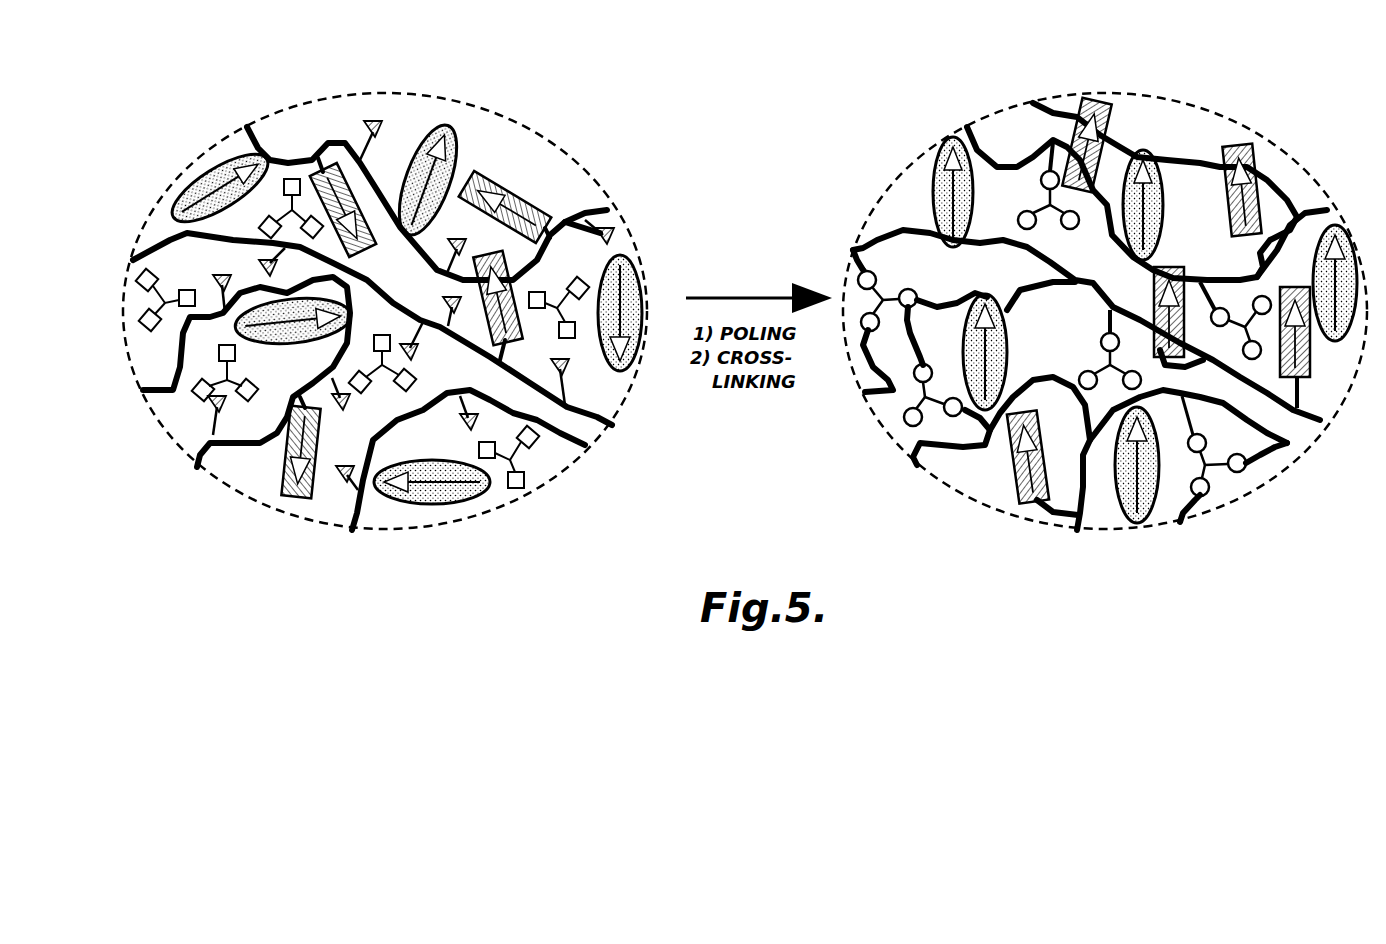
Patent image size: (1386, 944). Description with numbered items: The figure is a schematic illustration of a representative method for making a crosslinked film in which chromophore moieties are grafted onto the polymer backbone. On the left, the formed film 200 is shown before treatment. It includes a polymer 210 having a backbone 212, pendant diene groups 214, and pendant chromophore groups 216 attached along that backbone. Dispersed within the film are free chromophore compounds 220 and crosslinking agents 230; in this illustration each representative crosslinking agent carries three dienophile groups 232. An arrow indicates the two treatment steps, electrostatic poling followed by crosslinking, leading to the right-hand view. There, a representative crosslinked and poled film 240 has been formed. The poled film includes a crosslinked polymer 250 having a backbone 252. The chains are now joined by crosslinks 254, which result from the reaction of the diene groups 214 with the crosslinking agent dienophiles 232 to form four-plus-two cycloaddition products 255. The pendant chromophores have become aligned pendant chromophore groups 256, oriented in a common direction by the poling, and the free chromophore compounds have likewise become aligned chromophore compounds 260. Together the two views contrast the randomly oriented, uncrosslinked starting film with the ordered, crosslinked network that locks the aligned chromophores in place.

The formed film 200 is at (582, 118).
The polymer 210 is at (568, 205).
The backbone 212 is at (562, 252).
The pendant diene groups 214 is at (222, 275).
The pendant chromophore groups 216 is at (507, 188).
The chromophore compounds 220 is at (208, 172).
The crosslinking agents 230 is at (278, 200).
The dienophile groups 232 is at (296, 178).
The crosslinked and poled film 240 is at (913, 128).
The crosslinked polymer 250 is at (1003, 152).
The backbone 252 is at (1297, 213).
The crosslinks 254 is at (1045, 203).
The 4+2 cycloaddition products 255 is at (860, 272).
The aligned pendant chromophore groups 256 is at (1095, 100).
The aligned chromophore compounds 260 is at (1145, 150).